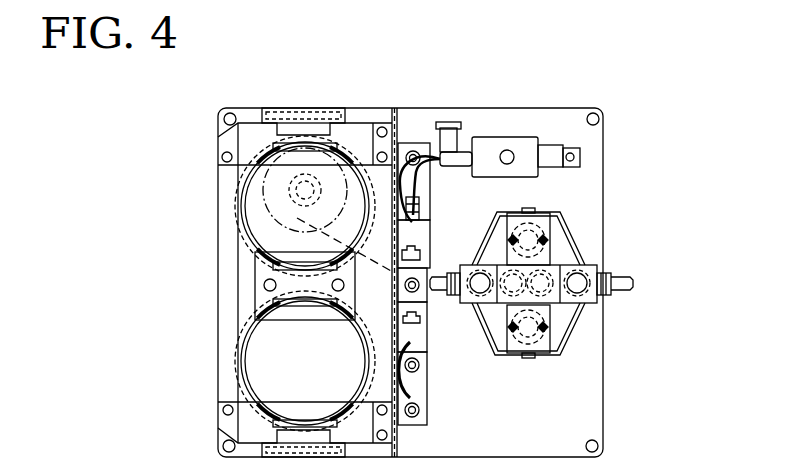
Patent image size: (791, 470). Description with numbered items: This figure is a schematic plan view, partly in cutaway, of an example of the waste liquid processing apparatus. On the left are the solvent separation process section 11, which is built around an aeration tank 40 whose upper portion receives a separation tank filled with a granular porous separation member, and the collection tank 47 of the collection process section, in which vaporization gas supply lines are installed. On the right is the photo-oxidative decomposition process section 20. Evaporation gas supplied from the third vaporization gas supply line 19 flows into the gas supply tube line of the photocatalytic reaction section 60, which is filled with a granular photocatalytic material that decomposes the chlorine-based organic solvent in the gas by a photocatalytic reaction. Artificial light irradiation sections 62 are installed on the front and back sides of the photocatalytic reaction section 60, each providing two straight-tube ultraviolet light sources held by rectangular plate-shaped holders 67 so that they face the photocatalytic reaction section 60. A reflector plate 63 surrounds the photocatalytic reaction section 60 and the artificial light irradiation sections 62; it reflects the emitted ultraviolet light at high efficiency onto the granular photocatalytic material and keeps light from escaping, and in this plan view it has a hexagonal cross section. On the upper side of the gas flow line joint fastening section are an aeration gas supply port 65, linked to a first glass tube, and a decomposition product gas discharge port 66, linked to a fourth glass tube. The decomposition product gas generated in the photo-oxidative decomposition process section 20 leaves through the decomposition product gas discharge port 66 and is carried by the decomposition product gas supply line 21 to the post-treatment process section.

The solvent separation process section 11 is at (263, 201).
The aeration tank 40 is at (243, 248).
The collection tank 47 is at (243, 357).
The third vaporization gas supply line 19 is at (433, 293).
The photo-oxidative decomposition process section 20 is at (585, 310).
The decomposition product gas supply line 21 is at (623, 292).
The photocatalytic reaction section 60 is at (603, 310).
The artificial light irradiation section 62 is at (549, 241).
The reflector plate 63 is at (578, 248).
The aeration gas supply port 65 is at (472, 272).
The decomposition product gas discharge port 66 is at (603, 266).
The holder 67 is at (555, 210).